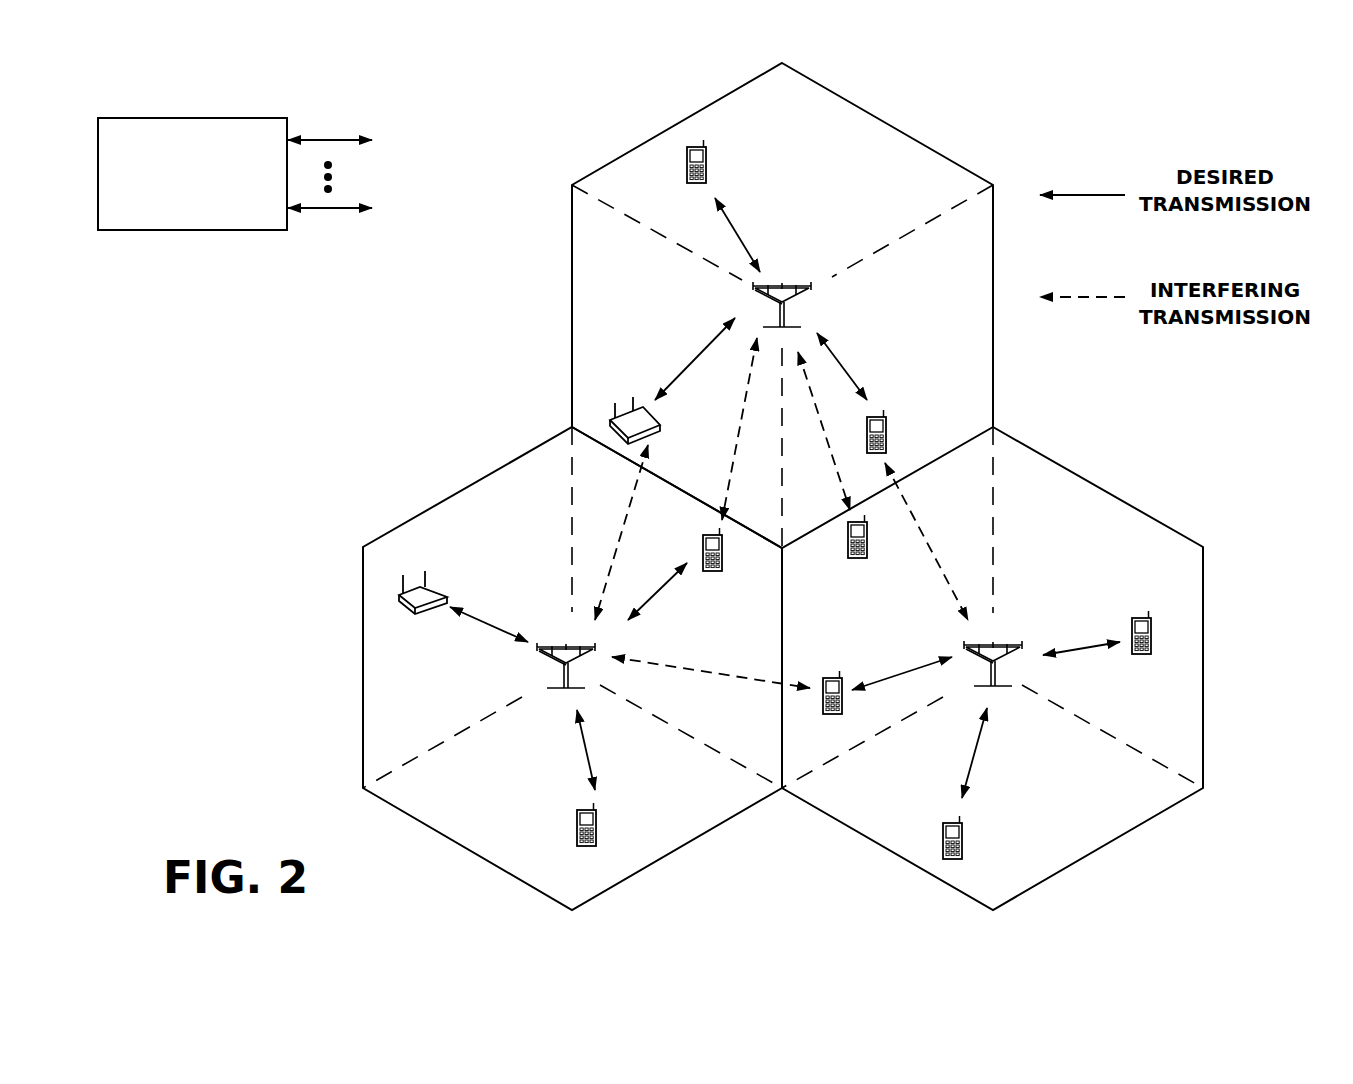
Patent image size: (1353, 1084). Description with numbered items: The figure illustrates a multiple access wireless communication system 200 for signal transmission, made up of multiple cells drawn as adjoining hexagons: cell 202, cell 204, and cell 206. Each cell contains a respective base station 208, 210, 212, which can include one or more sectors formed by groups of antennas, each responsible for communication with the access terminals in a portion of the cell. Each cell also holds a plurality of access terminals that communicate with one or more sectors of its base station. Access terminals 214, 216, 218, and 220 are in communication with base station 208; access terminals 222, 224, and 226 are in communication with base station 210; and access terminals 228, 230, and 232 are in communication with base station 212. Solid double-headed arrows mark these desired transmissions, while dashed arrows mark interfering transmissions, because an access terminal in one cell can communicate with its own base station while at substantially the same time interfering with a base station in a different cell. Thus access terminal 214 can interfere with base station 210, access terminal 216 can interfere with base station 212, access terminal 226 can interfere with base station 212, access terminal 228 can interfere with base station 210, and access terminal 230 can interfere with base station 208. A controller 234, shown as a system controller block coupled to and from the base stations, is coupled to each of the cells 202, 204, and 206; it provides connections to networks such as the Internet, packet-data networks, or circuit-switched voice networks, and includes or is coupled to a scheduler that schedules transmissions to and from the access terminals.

The multiple access wireless communication system 200 is at (1092, 105).
The cell 202 is at (1141, 803).
The cell 204 is at (466, 818).
The cell 206 is at (893, 155).
The base station 208 is at (1003, 648).
The base station 210 is at (556, 646).
The base station 212 is at (775, 283).
The access terminal 214 is at (841, 677).
The access terminal 216 is at (861, 558).
The access terminal 218 is at (1140, 653).
The access terminal 220 is at (962, 843).
The access terminal 222 is at (595, 827).
The access terminal 224 is at (413, 614).
The access terminal 226 is at (713, 572).
The access terminal 228 is at (660, 418).
The access terminal 230 is at (886, 430).
The access terminal 232 is at (707, 157).
The controller 234 is at (235, 118).